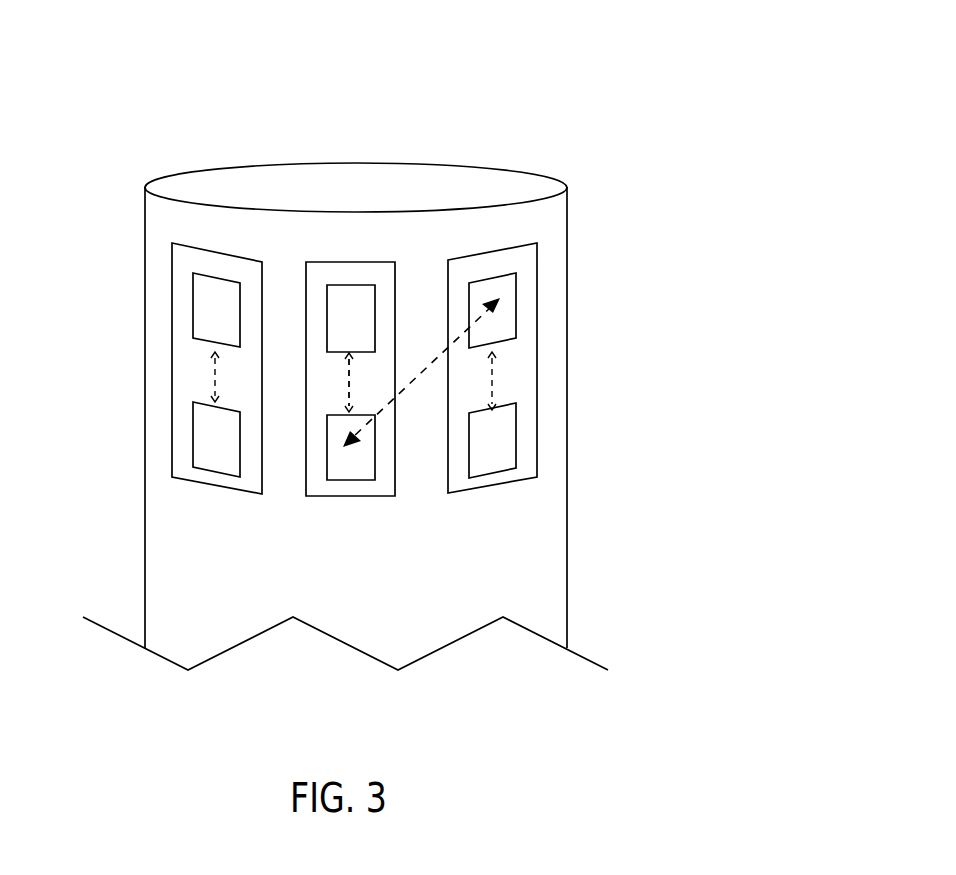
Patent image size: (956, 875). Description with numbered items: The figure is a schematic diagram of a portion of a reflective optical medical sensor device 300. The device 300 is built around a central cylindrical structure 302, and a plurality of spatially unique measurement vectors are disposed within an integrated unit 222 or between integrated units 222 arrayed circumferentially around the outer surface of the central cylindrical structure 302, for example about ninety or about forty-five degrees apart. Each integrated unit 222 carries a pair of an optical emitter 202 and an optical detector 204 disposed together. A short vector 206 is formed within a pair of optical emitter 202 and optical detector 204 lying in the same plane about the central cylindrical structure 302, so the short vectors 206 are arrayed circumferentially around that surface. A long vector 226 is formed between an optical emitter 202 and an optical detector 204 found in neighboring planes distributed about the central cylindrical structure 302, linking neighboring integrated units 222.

The reflective optical medical sensor device 300 is at (482, 112).
The central cylindrical structure 302 is at (160, 220).
The integrated unit 222 is at (327, 275).
The optical detector 204 is at (350, 318).
The optical emitter 202 is at (355, 462).
The short vector 206 is at (349, 385).
The long vector 226 is at (449, 348).